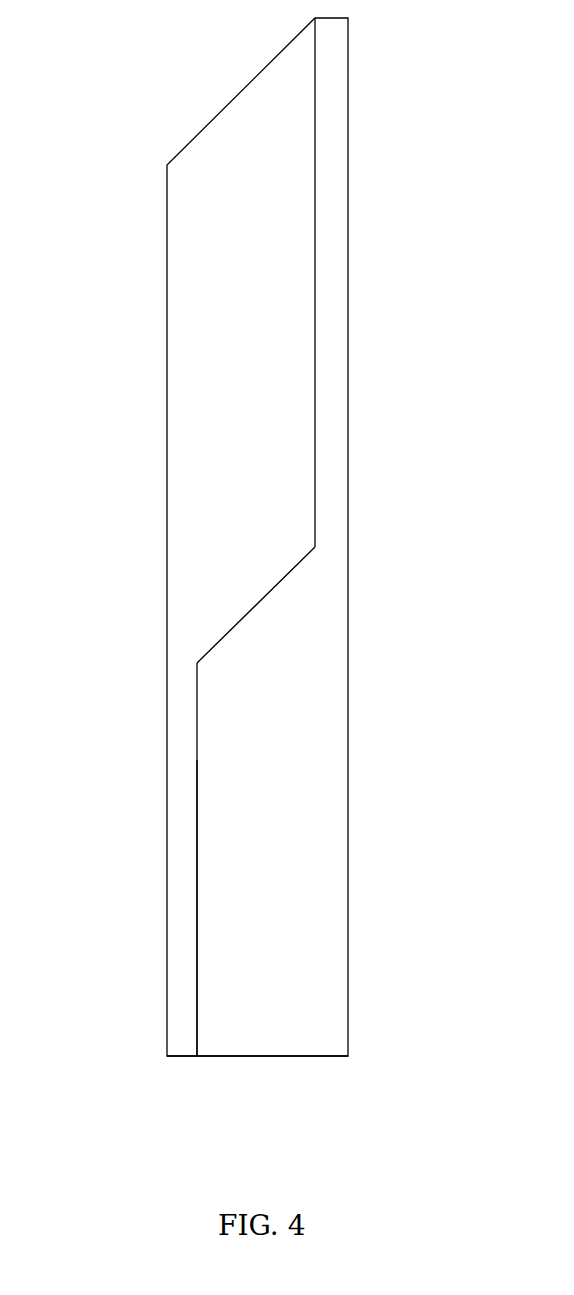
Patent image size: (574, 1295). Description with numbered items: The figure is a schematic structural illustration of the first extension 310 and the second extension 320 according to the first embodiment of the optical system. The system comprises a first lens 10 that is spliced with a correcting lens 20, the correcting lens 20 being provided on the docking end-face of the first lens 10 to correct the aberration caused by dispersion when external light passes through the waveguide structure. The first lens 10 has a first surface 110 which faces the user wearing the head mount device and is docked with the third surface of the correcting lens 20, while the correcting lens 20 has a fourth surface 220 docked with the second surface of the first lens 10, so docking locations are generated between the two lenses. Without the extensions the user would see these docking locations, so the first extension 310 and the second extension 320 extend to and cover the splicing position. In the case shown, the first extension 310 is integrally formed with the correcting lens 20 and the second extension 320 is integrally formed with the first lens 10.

The first lens 10 is at (241, 116).
The first surface 110 is at (316, 255).
The first extension 310 is at (337, 540).
The second extension 320 is at (184, 668).
The fourth surface 220 is at (196, 871).
The correcting lens 20 is at (273, 1031).